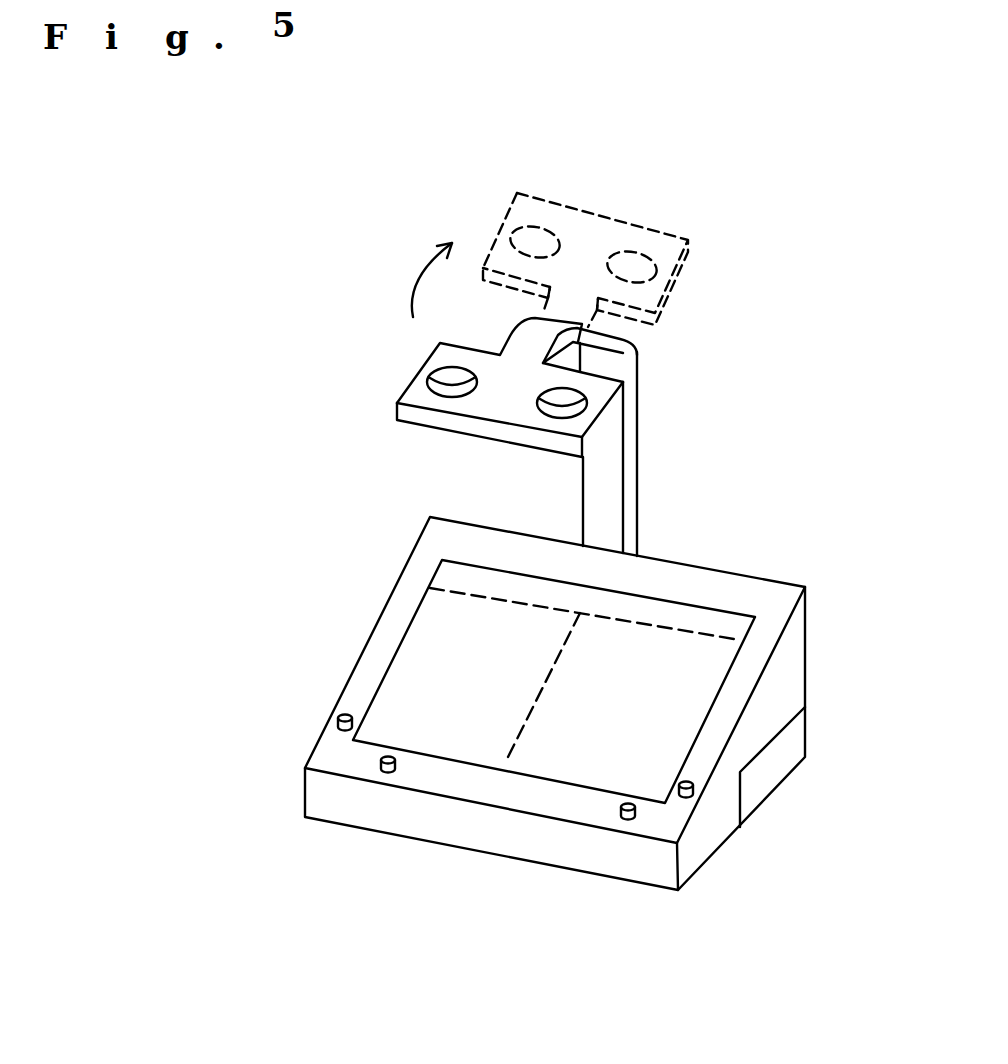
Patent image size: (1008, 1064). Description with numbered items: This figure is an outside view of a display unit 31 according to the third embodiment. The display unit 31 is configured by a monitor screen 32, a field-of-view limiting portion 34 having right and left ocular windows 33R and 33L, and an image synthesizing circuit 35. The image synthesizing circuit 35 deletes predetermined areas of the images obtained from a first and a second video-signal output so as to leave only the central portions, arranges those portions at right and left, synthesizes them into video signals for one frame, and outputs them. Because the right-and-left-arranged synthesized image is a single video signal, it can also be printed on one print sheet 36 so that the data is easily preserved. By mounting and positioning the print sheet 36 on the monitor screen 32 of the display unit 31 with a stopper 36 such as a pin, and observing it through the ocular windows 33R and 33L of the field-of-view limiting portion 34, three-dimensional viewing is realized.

The display unit 31 is at (717, 490).
The monitor screen 32 is at (517, 763).
The left ocular window 33L is at (437, 380).
The right ocular window 33R is at (577, 390).
The field-of-view limiting portion 34 is at (487, 408).
The image synthesizing circuit 35 is at (772, 774).
The stopper 36 is at (382, 769).